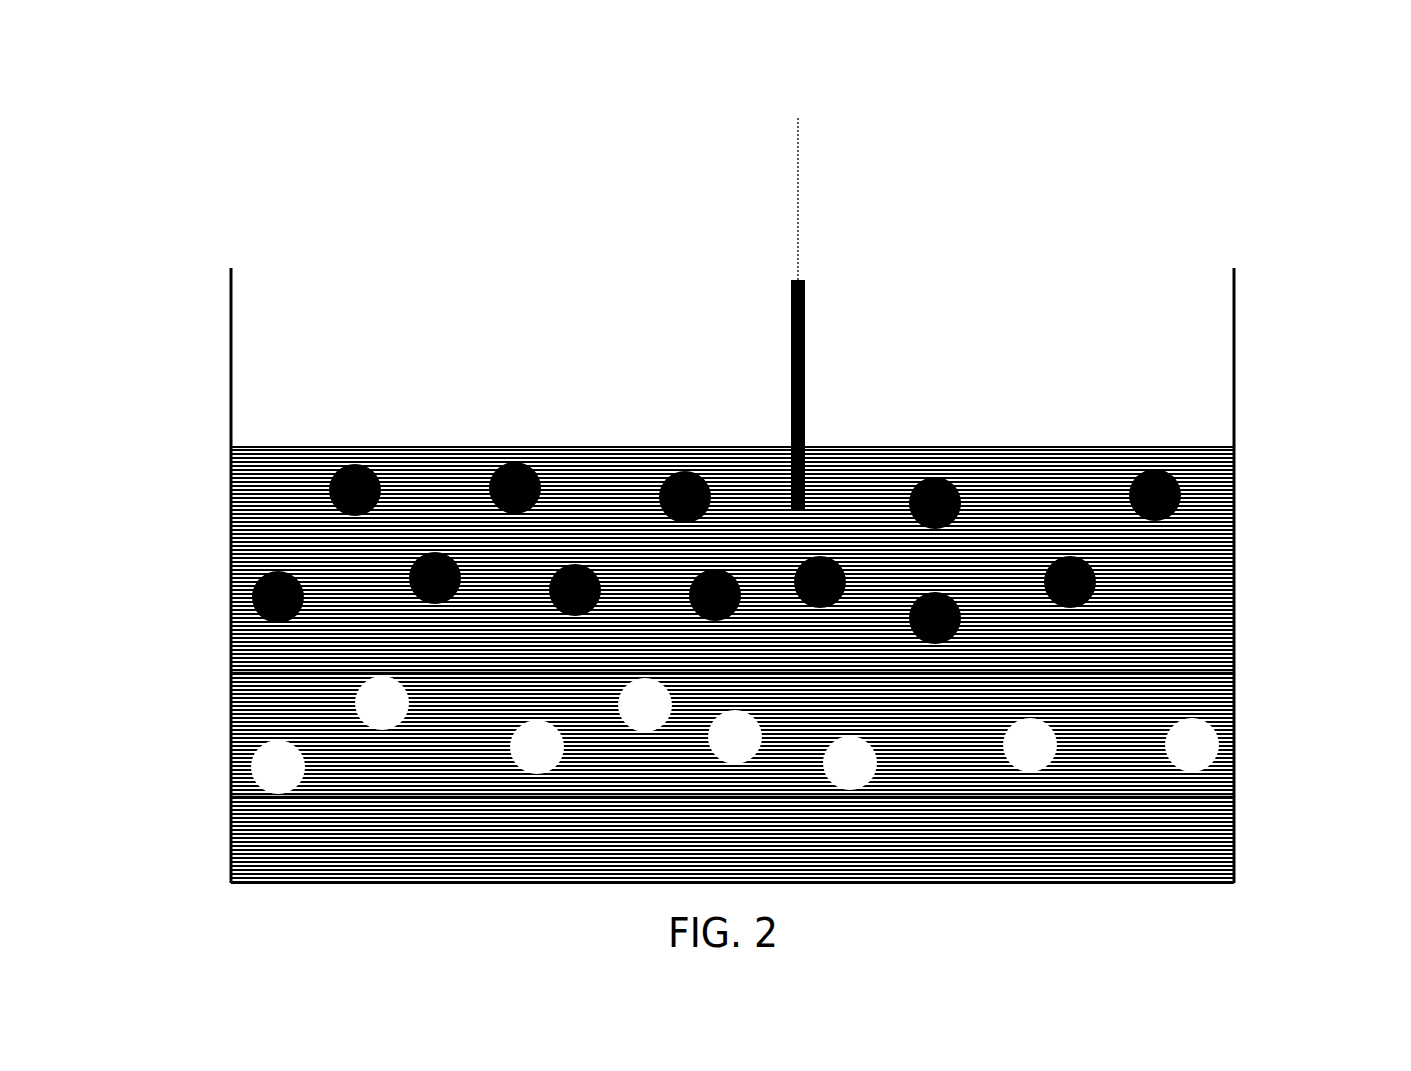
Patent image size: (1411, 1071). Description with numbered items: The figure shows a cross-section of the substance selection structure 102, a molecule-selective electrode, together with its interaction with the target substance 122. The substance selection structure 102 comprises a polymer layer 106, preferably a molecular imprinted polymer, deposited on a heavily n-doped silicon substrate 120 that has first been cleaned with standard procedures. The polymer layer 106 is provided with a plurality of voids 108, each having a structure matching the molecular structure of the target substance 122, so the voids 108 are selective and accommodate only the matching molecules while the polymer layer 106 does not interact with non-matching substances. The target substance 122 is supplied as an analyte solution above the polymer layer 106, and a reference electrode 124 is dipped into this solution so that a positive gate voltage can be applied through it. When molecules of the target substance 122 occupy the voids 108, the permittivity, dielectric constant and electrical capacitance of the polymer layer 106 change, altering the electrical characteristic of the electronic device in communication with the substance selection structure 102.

The substance selection structure 102 is at (1260, 147).
The polymer layer 106 is at (1125, 760).
The voids 108 is at (375, 716).
The silicon substrate 120 is at (355, 820).
The target substance 122 is at (423, 577).
The reference electrode 124 is at (799, 283).